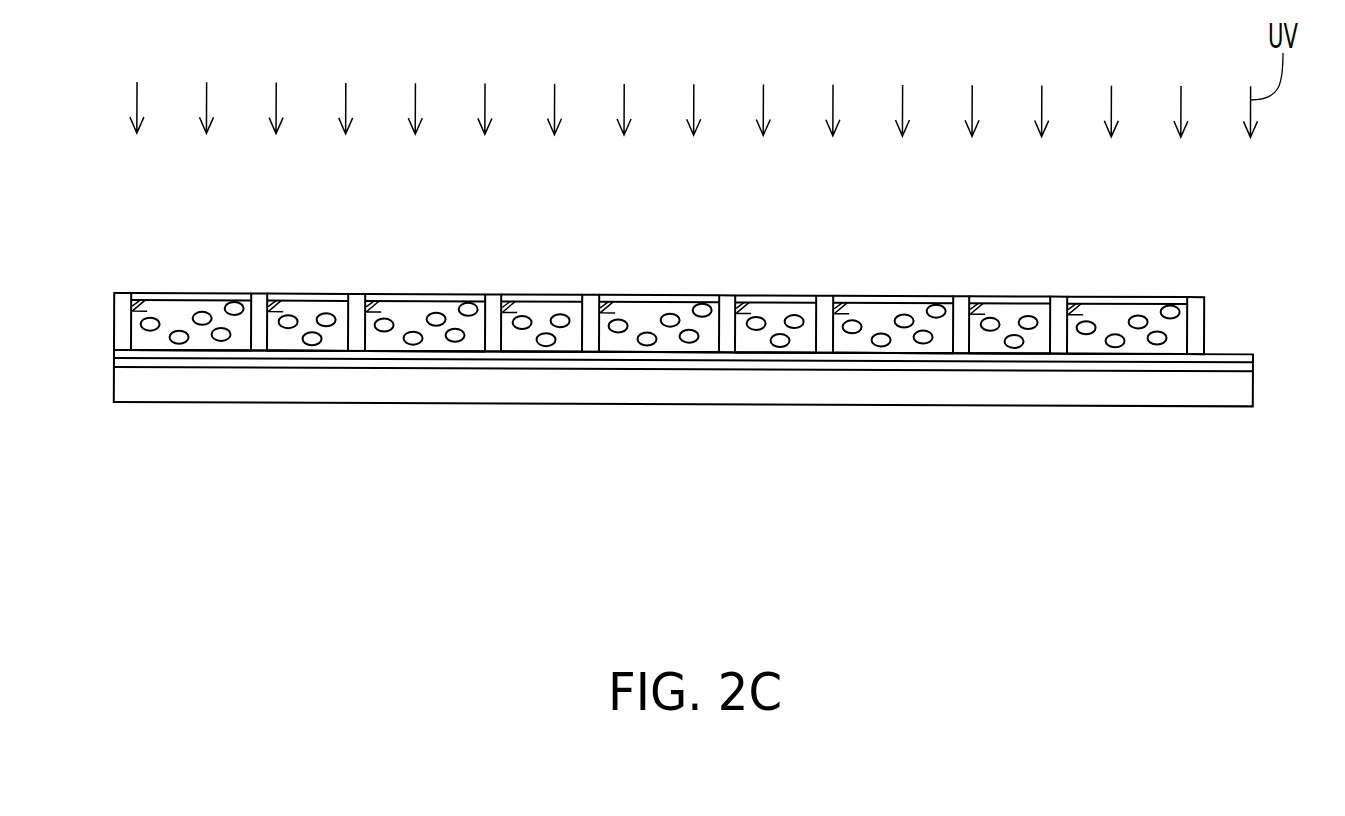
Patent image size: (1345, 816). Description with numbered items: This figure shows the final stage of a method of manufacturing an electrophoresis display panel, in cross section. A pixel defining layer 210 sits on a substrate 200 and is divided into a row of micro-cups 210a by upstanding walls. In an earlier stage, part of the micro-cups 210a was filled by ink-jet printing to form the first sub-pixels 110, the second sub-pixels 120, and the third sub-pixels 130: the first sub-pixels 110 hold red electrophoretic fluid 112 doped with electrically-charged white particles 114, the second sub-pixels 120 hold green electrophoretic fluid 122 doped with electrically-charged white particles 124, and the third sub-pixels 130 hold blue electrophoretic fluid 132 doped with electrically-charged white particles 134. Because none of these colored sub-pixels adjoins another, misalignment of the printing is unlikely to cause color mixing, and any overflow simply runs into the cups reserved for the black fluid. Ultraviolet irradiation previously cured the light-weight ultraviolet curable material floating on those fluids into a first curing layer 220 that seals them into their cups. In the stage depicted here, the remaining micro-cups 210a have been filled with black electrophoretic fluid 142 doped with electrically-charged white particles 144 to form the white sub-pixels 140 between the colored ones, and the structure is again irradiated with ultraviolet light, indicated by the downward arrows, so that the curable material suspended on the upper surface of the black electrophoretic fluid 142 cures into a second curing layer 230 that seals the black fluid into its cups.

The substrate 200 is at (1242, 392).
The pixel defining layer 210 is at (114, 327).
The micro-cups 210a is at (144, 302).
The first curing layer 220 is at (178, 298).
The second curing layer 230 is at (334, 300).
The first sub-pixels 110 is at (248, 234).
The red electrophoretic fluid 112 is at (188, 312).
The electrically-charged white particles 114 is at (233, 302).
The second sub-pixels 120 is at (482, 234).
The green electrophoretic fluid 122 is at (422, 313).
The electrically-charged white particles 124 is at (468, 303).
The third sub-pixels 130 is at (716, 234).
The blue electrophoretic fluid 132 is at (658, 314).
The electrically-charged white particles 134 is at (703, 304).
The white sub-pixels 140 is at (320, 442).
The black electrophoretic fluid 142 is at (283, 344).
The electrically-charged white particles 144 is at (315, 342).